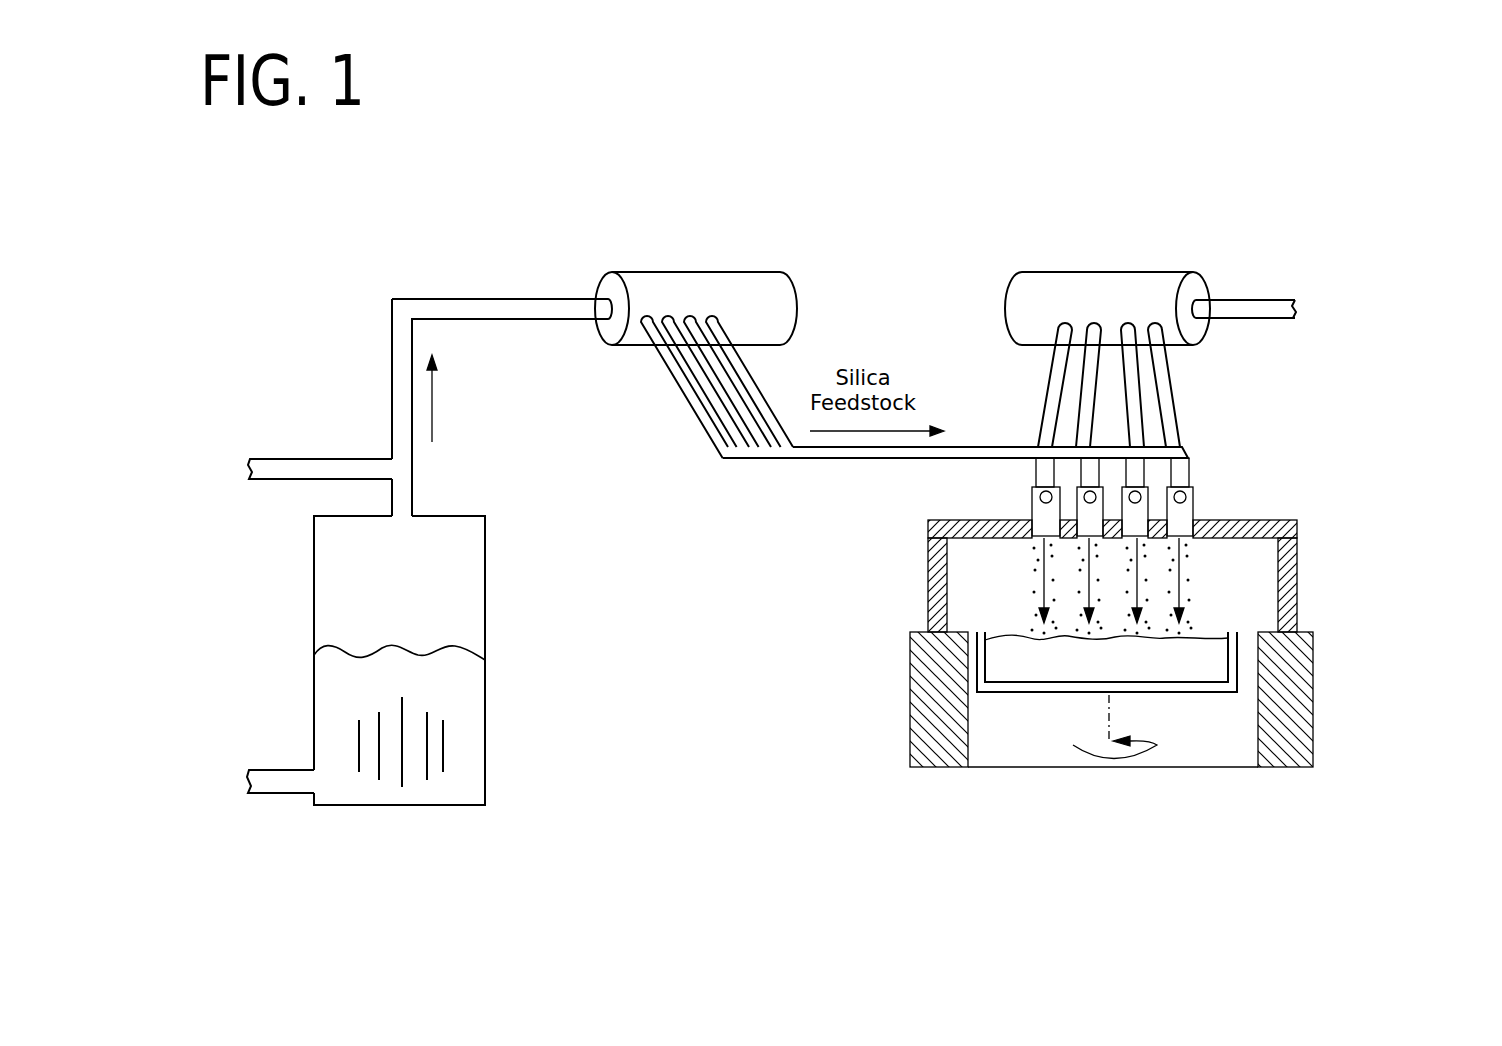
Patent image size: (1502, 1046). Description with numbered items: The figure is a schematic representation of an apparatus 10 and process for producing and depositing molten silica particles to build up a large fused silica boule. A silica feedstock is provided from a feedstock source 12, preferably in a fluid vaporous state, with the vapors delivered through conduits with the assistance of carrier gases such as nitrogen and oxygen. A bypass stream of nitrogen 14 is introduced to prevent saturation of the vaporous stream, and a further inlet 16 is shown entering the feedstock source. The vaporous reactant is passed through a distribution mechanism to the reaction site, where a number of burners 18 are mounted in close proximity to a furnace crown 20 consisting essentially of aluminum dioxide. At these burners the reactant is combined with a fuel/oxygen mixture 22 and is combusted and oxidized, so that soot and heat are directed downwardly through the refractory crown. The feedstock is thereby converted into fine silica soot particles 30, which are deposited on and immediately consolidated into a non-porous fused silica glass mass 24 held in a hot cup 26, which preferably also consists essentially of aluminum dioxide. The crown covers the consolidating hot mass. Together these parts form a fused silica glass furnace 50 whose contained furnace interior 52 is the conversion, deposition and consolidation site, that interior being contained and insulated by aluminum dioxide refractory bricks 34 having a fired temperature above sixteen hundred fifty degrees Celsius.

The apparatus 10 is at (972, 256).
The feedstock source 12 is at (545, 720).
The bypass stream of nitrogen 14 is at (229, 467).
The liquid inlet 16 is at (229, 781).
The burners 18 is at (1040, 524).
The furnace crown 20 is at (1300, 523).
The fuel/oxygen mixture 22 is at (1319, 310).
The non-porous mass 24 is at (1050, 667).
The hot cup 26 is at (1167, 692).
The silica soot particles 30 is at (1205, 588).
The aluminum dioxide refractory bricks 34 is at (915, 540).
The fused silica glass furnace 50 is at (1318, 500).
The furnace interior 52 is at (985, 622).